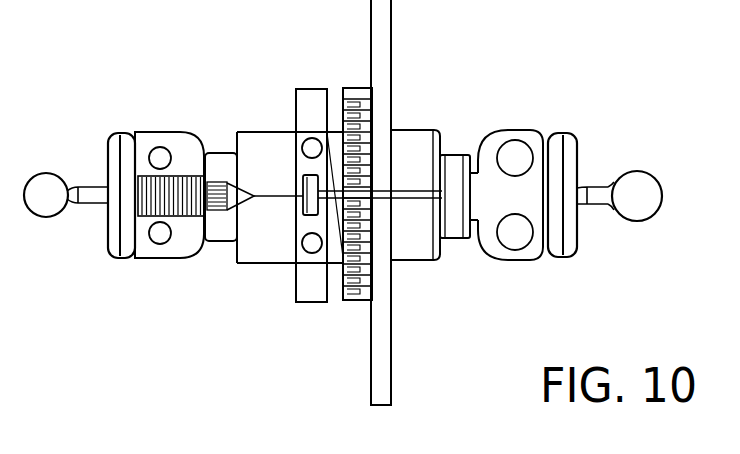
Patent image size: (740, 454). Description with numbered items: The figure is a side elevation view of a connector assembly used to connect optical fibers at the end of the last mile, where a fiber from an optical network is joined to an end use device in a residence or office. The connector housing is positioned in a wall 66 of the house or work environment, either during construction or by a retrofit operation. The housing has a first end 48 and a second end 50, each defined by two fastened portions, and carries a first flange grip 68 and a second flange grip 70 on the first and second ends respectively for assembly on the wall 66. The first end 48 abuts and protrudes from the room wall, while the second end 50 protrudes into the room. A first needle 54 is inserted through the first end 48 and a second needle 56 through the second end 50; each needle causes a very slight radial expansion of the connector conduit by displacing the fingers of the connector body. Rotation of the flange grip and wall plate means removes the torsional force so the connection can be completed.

The second end of the connector housing 50 is at (203, 73).
The second needle 56 is at (93, 207).
The first needle 54 is at (577, 235).
The second flange grip 70 is at (303, 302).
The first flange grip 68 is at (355, 303).
The wall 66 is at (390, 347).
The first end of the connector housing 48 is at (473, 157).